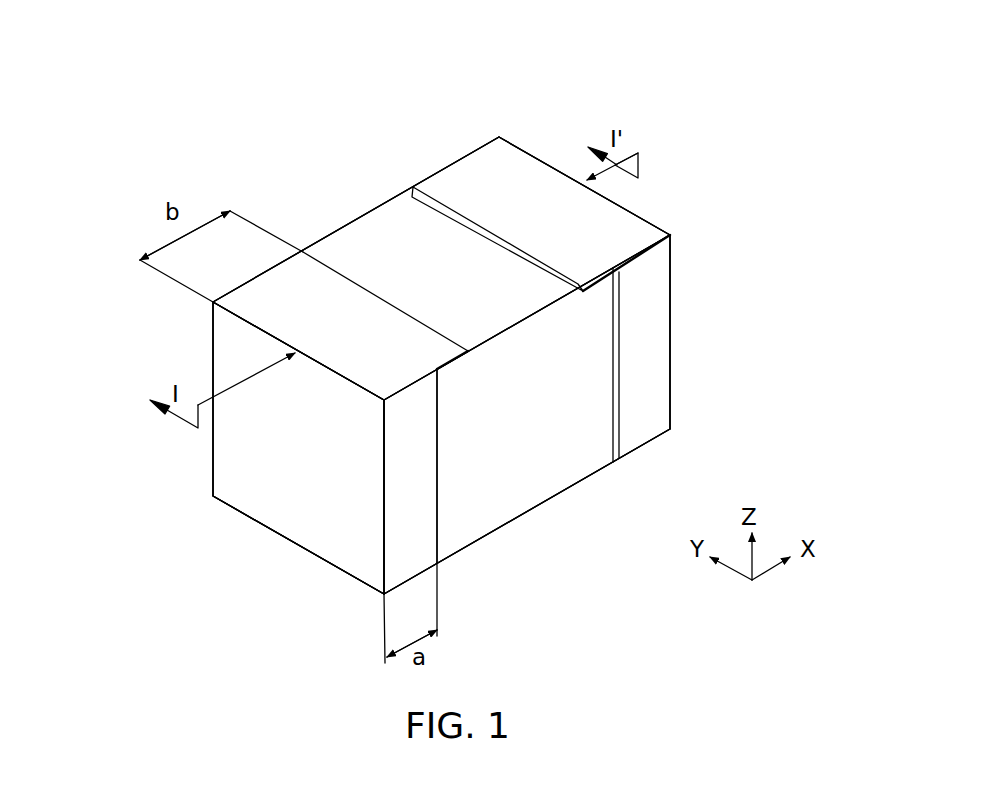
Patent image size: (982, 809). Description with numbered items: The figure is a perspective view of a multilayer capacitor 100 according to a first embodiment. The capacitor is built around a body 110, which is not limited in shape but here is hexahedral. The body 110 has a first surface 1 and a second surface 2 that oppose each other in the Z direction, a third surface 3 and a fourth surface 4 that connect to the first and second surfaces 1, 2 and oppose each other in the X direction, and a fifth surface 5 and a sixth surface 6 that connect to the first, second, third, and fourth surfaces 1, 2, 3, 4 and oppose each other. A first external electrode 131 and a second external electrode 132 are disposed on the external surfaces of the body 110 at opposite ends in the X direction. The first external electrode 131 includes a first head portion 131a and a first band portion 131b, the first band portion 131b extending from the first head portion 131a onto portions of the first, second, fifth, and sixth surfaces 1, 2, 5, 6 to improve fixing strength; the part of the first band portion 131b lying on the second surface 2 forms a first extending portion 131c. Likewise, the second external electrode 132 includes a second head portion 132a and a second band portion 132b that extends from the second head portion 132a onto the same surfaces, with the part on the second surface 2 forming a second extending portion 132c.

The multilayer capacitor 100 is at (327, 44).
The body 110 is at (562, 443).
The first surface 1 is at (517, 493).
The second surface 2 is at (470, 262).
The third surface 3 is at (267, 443).
The fourth surface 4 is at (535, 180).
The fifth surface 5 is at (590, 413).
The sixth surface 6 is at (395, 270).
The first external electrode 131 is at (288, 449).
The first head portion 131a is at (327, 515).
The first band portion 131b is at (413, 563).
The first extending portion 131c is at (395, 328).
The second external electrode 132 is at (613, 324).
The second head portion 132a is at (671, 288).
The second band portion 132b is at (684, 365).
The second extending portion 132c is at (580, 263).